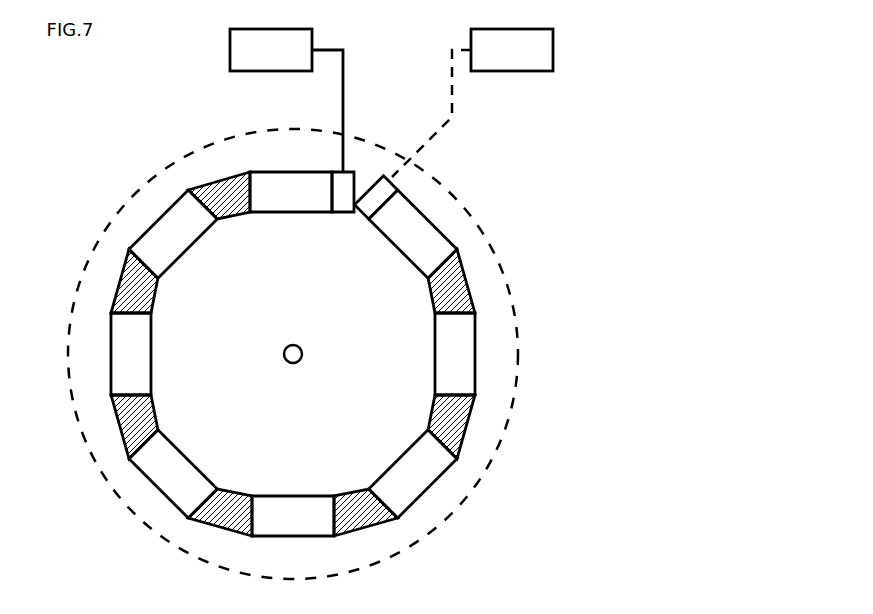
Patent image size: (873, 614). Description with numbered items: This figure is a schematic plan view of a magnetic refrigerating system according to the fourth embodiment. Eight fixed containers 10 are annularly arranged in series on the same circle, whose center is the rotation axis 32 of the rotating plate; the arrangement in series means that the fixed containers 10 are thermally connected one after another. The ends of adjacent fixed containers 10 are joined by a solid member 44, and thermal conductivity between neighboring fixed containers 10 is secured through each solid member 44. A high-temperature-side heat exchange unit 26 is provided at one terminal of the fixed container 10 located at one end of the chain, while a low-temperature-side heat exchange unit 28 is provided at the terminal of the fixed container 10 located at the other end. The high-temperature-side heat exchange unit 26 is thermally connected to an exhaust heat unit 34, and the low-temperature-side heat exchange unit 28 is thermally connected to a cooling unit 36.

The fixed container 10 is at (300, 213).
The high-temperature-side heat exchange unit 26 is at (331, 172).
The low-temperature-side heat exchange unit 28 is at (383, 192).
The rotation axis 32 is at (293, 366).
The exhaust heat unit 34 is at (230, 48).
The cooling unit 36 is at (540, 56).
The solid member 44 is at (217, 180).